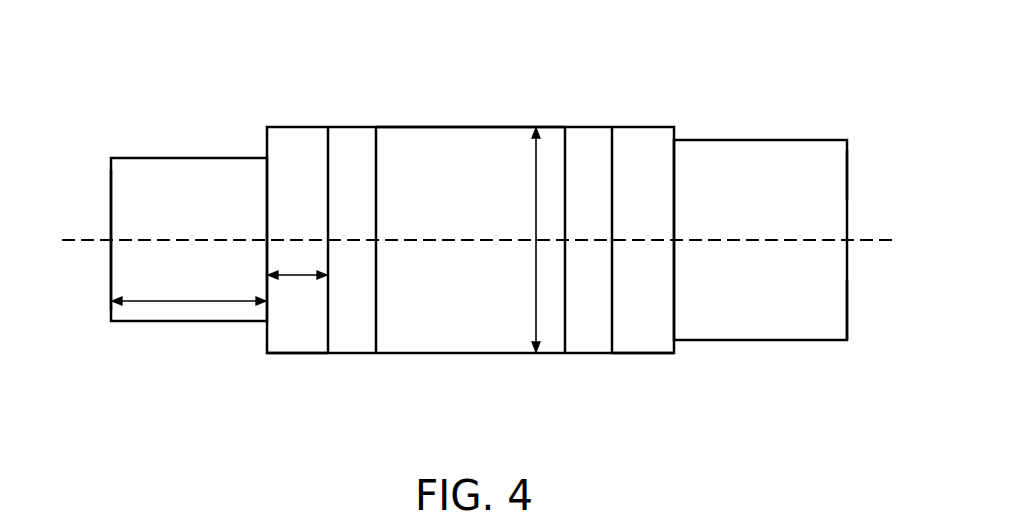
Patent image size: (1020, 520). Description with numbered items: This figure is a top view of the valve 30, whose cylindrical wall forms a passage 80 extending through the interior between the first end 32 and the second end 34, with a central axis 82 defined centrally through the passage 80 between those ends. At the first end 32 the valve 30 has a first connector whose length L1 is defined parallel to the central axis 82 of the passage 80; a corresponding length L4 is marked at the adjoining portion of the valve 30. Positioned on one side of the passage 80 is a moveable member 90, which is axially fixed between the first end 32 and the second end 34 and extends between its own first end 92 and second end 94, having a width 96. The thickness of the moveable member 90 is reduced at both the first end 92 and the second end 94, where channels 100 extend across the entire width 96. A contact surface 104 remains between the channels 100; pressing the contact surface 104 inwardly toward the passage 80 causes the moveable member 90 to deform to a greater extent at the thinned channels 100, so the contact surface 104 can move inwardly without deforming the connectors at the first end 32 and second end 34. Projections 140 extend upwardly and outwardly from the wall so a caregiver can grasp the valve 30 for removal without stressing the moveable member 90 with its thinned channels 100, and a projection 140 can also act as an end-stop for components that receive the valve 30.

The valve 30 is at (103, 60).
The first end 32 is at (92, 184).
The second end 34 is at (859, 151).
The passage 80 is at (860, 327).
The central axis 82 is at (870, 242).
The moveable member 90 is at (436, 372).
The first end 92 is at (163, 168).
The second end 94 is at (803, 150).
The width 96 is at (535, 290).
The channel 100 is at (350, 138).
The contact surface 104 is at (433, 138).
The projection 140 is at (295, 372).
The length of first connector L1 is at (190, 298).
The length L4 is at (296, 278).